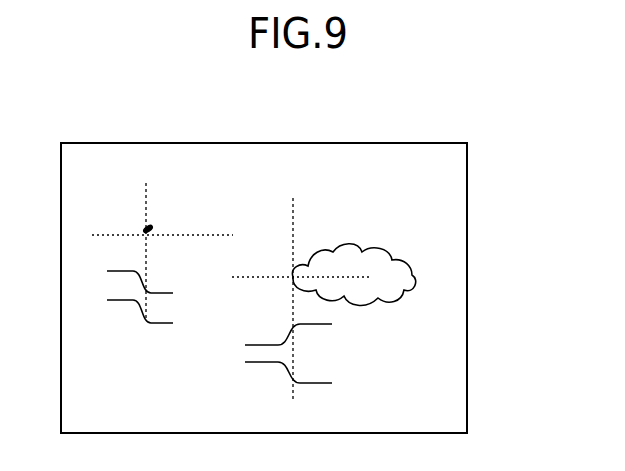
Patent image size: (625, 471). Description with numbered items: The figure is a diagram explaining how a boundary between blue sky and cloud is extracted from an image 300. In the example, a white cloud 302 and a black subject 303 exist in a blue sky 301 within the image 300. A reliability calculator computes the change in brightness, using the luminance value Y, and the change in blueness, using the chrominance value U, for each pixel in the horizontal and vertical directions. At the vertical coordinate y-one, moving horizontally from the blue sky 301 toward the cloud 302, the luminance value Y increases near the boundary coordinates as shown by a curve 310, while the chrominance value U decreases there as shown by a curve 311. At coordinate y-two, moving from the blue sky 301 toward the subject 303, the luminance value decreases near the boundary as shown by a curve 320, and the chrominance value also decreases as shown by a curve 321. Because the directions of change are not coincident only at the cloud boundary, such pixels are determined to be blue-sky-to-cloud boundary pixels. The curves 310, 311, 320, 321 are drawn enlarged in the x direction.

The image 300 is at (418, 143).
The blue sky 301 is at (443, 168).
The white cloud 302 is at (405, 268).
The black subject 303 is at (149, 228).
The curve 310 is at (323, 328).
The curve 311 is at (323, 388).
The curve 320 is at (155, 291).
The curve 321 is at (157, 324).